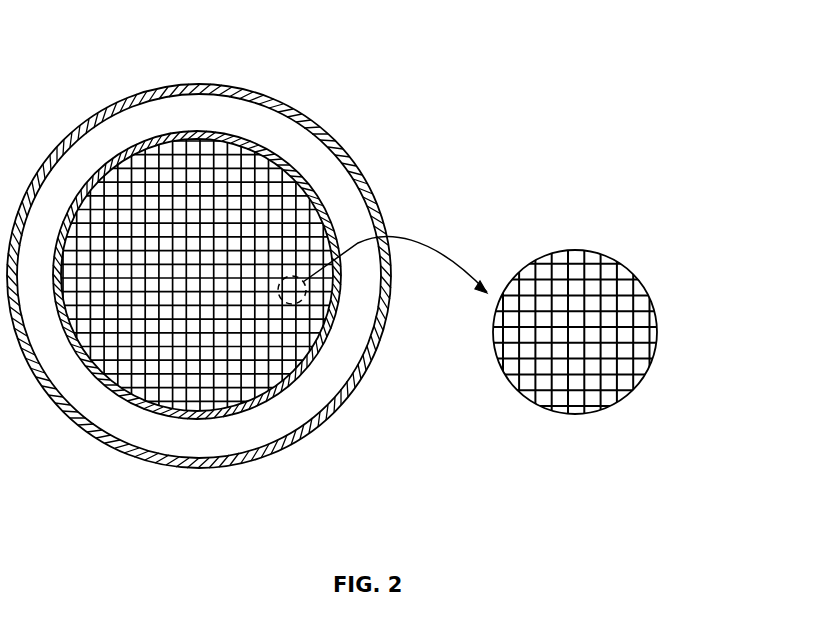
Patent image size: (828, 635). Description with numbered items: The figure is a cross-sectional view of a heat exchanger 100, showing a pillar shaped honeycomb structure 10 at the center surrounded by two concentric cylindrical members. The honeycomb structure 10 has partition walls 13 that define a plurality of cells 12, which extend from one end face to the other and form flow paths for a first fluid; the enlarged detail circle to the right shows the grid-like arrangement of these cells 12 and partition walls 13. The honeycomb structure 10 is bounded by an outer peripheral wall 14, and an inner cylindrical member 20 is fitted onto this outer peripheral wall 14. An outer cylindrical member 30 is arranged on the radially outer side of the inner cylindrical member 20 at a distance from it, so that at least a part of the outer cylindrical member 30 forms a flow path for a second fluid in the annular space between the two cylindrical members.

The heat exchanger 100 is at (248, 283).
The pillar shaped honeycomb structure 10 is at (210, 195).
The cells 12 is at (615, 303).
The partition walls 13 is at (605, 285).
The outer peripheral wall 14 is at (202, 135).
The inner cylindrical member 20 is at (290, 170).
The outer cylindrical member 30 is at (377, 198).